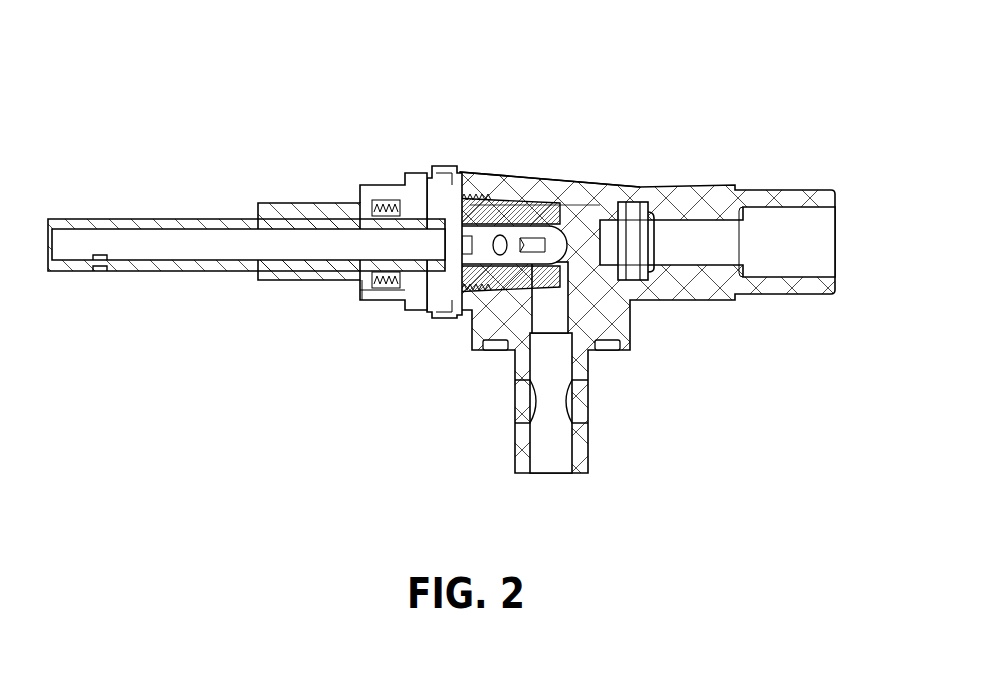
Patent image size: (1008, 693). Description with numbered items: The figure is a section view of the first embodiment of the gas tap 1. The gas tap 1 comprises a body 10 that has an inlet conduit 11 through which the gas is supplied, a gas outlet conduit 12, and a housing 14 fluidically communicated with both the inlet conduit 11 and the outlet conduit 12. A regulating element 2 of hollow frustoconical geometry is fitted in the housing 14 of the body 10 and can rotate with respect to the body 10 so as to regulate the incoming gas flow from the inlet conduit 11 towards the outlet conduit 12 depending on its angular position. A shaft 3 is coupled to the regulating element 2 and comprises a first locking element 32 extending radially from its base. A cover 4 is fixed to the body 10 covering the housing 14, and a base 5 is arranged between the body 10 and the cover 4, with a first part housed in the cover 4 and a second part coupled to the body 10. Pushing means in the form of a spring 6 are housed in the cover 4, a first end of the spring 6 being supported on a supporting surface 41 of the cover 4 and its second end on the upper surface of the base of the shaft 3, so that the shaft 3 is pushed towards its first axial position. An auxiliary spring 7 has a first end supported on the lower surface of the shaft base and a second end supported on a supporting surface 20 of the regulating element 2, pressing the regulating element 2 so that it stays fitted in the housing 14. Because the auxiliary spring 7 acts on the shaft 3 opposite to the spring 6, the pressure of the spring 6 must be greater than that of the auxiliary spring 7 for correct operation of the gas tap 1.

The gas tap 1 is at (727, 77).
The regulating element 2 is at (577, 196).
The shaft 3 is at (102, 222).
The cover 4 is at (297, 275).
The base 5 is at (456, 177).
The spring 6 is at (350, 183).
The auxiliary spring 7 is at (470, 192).
The body 10 is at (712, 300).
The inlet conduit 11 is at (555, 462).
The gas outlet conduit 12 is at (805, 238).
The housing 14 is at (597, 282).
The supporting surface 20 is at (512, 190).
The first locking element 32 is at (428, 177).
The supporting surface 41 is at (364, 295).